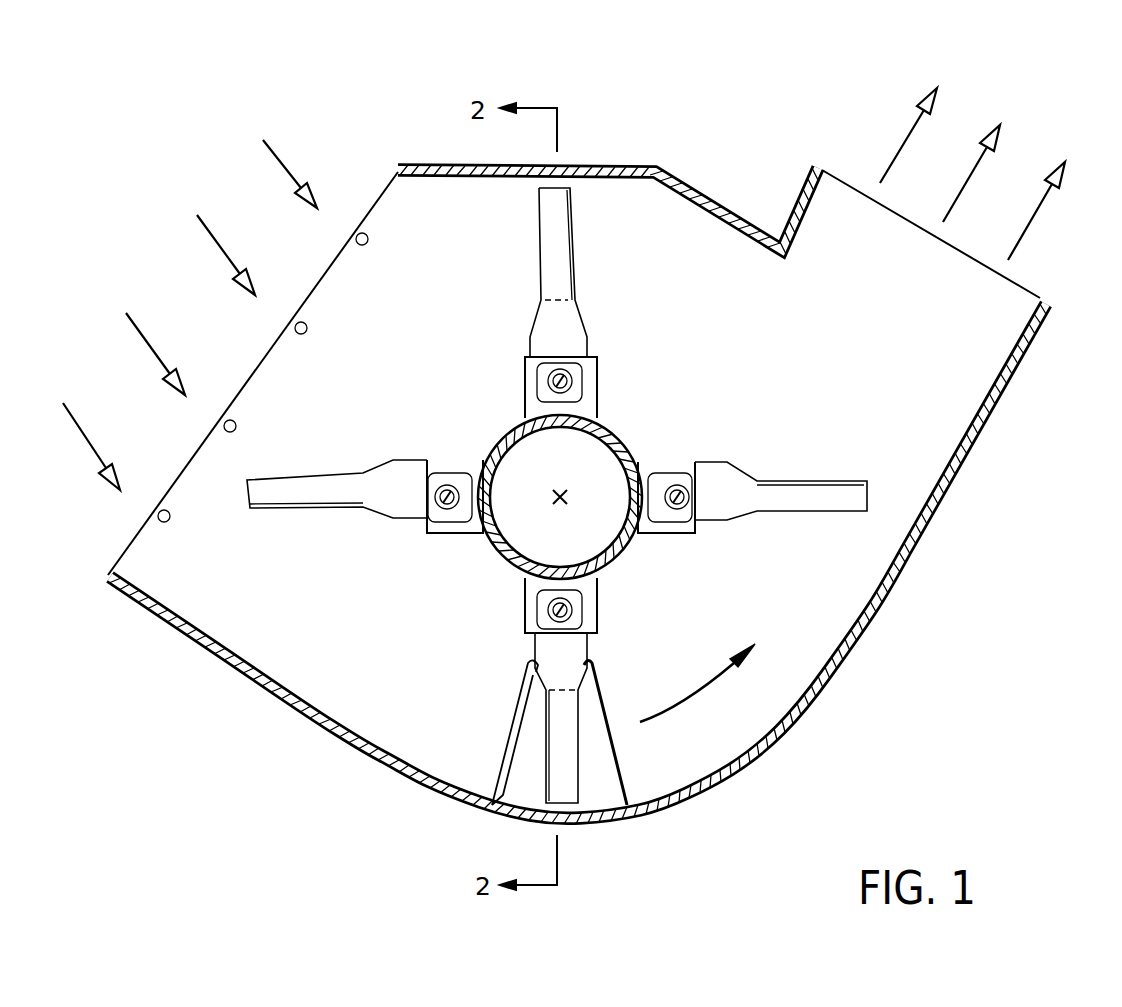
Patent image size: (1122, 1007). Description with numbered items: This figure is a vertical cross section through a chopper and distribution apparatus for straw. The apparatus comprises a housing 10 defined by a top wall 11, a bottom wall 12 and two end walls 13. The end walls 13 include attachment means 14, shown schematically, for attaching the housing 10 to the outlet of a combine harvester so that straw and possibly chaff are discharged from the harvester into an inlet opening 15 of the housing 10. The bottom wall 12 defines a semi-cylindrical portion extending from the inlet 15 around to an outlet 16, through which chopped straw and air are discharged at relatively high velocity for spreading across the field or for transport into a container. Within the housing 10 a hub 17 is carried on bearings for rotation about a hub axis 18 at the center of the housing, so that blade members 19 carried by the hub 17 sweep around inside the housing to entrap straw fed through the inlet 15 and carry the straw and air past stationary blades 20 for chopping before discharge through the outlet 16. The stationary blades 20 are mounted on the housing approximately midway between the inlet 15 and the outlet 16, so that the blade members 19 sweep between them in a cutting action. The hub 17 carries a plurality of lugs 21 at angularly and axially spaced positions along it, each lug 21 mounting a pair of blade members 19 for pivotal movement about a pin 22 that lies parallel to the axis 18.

The housing 10 is at (590, 167).
The top wall 11 is at (641, 168).
The bottom wall 12 is at (722, 786).
The end walls 13 is at (694, 228).
The attachment means 14 is at (232, 427).
The inlet opening 15 is at (306, 297).
The outlet 16 is at (1024, 289).
The hub 17 is at (503, 435).
The hub axis 18 is at (567, 498).
The blade members 19 is at (606, 313).
The stationary blades 20 is at (515, 707).
The lugs 21 is at (437, 457).
The pin 22 is at (440, 505).